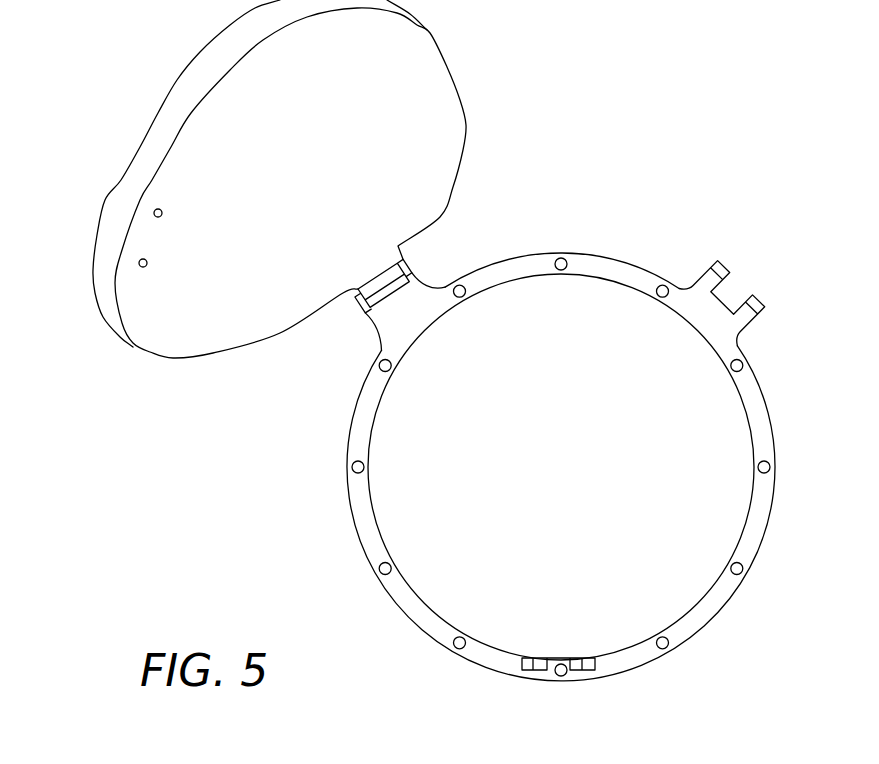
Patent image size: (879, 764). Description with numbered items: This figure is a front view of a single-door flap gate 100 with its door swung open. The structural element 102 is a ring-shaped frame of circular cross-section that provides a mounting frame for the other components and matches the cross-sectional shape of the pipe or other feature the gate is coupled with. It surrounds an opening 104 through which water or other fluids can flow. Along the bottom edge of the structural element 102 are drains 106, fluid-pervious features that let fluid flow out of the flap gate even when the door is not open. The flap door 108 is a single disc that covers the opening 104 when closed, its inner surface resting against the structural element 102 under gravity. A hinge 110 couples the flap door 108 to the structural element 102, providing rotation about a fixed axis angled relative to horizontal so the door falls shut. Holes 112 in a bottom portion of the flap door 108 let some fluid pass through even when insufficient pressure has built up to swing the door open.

The single-door flap gate 100 is at (681, 230).
The structural element 102 is at (360, 515).
The opening 104 is at (445, 597).
The drains 106 is at (580, 667).
The flap door 108 is at (150, 135).
The hinge 110 is at (408, 280).
The holes 112 is at (140, 262).